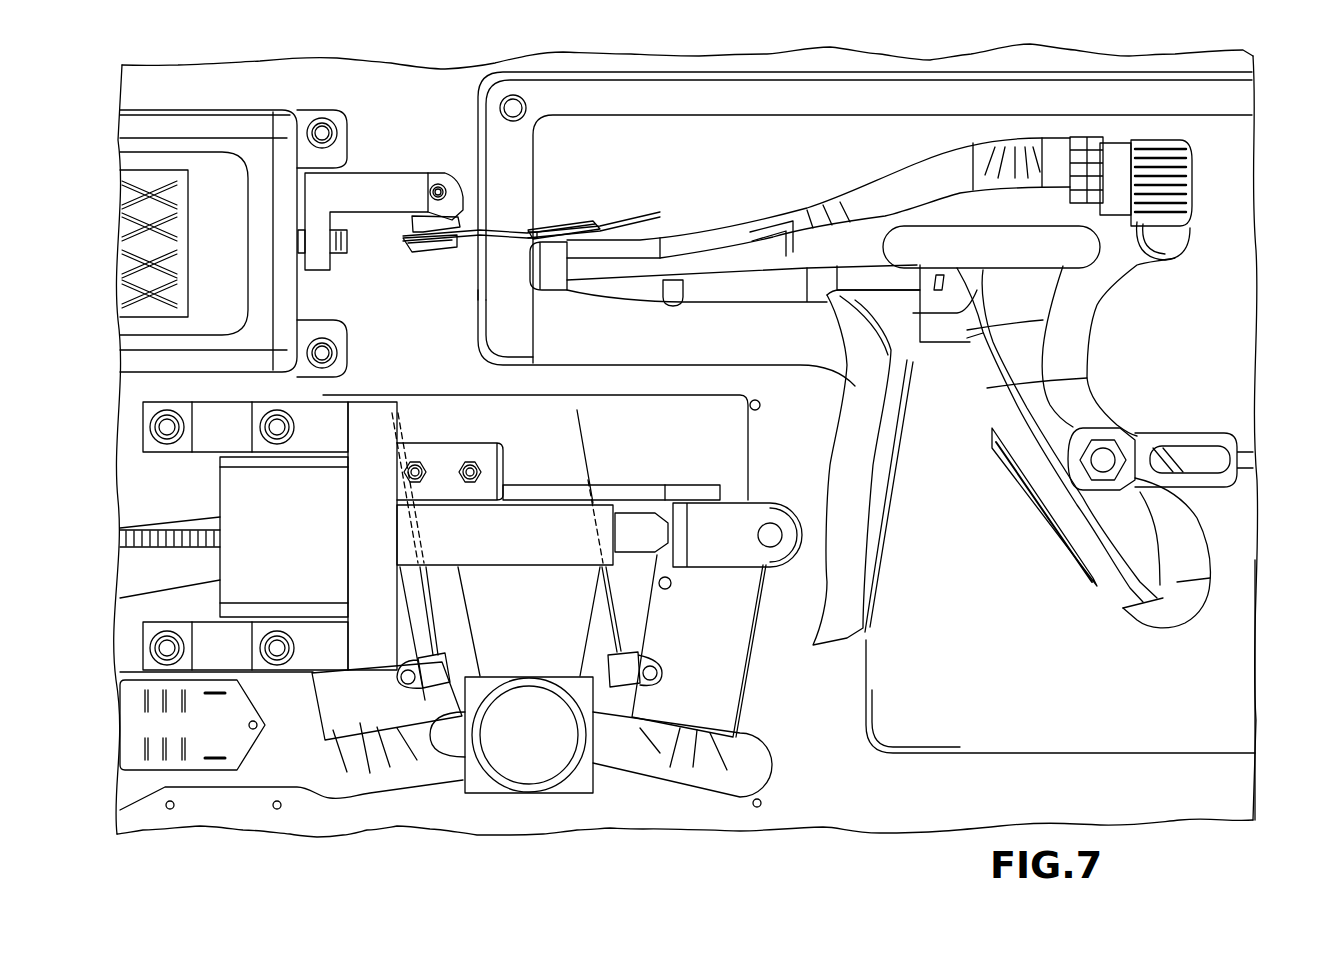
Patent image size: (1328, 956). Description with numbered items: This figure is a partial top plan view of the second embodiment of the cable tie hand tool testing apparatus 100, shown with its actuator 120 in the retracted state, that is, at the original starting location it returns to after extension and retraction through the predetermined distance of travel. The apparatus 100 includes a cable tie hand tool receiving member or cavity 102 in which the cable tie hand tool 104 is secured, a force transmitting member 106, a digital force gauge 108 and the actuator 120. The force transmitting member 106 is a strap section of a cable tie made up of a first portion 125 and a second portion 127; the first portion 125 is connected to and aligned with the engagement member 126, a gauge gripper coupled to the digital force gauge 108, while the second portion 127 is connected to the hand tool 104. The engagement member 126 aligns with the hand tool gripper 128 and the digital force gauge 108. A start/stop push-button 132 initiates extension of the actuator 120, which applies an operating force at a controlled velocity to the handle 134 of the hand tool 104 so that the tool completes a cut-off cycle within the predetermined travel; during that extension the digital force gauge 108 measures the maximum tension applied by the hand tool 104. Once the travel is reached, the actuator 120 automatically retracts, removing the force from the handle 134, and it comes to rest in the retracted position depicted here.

The cable tie hand tool testing apparatus 100 is at (1268, 318).
The cable tie hand tool receiving member or cavity 102 is at (1120, 128).
The cable tie hand tool 104 is at (870, 183).
The force transmitting member 106 is at (497, 245).
The digital force gauge 108 is at (230, 123).
The actuator 120 is at (737, 553).
The first portion 125 is at (477, 233).
The engagement member 126 is at (405, 185).
The second portion 127 is at (640, 212).
The hand tool gripper 128 is at (580, 222).
The start/stop push-button 132 is at (537, 750).
The handle 134 is at (852, 565).